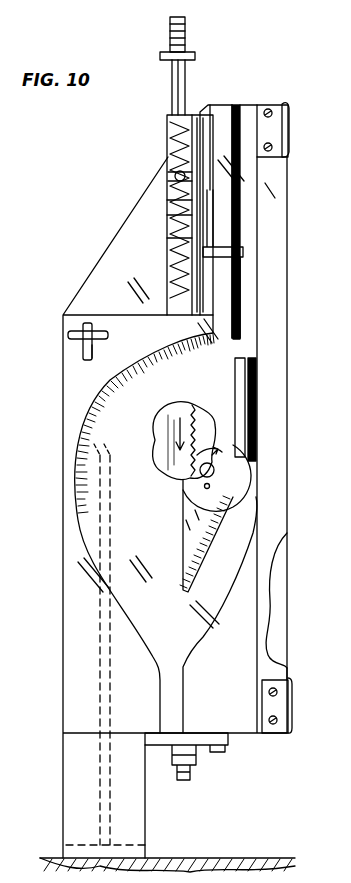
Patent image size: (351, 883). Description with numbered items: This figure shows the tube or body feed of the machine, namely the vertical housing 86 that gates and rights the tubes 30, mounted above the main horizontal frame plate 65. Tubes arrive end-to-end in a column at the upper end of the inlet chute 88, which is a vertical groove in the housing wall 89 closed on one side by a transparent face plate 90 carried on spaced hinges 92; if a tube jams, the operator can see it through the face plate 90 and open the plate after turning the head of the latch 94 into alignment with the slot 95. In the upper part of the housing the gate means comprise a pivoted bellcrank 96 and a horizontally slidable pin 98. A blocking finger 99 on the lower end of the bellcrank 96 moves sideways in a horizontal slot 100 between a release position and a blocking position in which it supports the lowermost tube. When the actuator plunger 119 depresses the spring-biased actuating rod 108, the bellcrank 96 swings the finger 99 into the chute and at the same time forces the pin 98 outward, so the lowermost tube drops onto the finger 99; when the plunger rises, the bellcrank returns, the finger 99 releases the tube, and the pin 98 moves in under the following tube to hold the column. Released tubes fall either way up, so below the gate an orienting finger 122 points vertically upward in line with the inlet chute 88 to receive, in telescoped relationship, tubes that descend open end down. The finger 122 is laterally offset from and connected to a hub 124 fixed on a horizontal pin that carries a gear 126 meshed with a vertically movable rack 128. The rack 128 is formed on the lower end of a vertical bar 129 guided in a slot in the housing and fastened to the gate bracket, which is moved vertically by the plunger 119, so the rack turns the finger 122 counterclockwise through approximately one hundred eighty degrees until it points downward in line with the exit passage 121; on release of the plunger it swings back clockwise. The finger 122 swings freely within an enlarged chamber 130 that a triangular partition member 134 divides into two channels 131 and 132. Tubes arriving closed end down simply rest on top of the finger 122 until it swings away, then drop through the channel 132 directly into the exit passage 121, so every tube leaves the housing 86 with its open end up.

The tube 30 is at (236, 379).
The main horizontal frame plate 65 is at (190, 856).
The vertical housing 86 is at (288, 177).
The inlet chute 88 is at (251, 104).
The vertical housing wall 89 is at (289, 605).
The face plate 90 is at (268, 562).
The hinge 92 is at (274, 130).
The latch 94 is at (72, 336).
The slot 95 is at (95, 356).
The bellcrank 96 is at (175, 176).
The slidable pin 98 is at (224, 122).
The blocking finger 99 is at (241, 284).
The horizontal slot 100 is at (236, 250).
The actuating rod 108 is at (186, 84).
The actuator plunger 119 is at (186, 29).
The exit passage 121 is at (183, 707).
The finger 122 is at (256, 388).
The hub 124 is at (250, 508).
The gear 126 is at (224, 456).
The rack 128 is at (178, 431).
The vertical bar 129 is at (172, 302).
The enlarged chamber 130 is at (165, 403).
The channel 131 is at (148, 523).
The channel 132 is at (241, 578).
The triangular partition member 134 is at (195, 538).